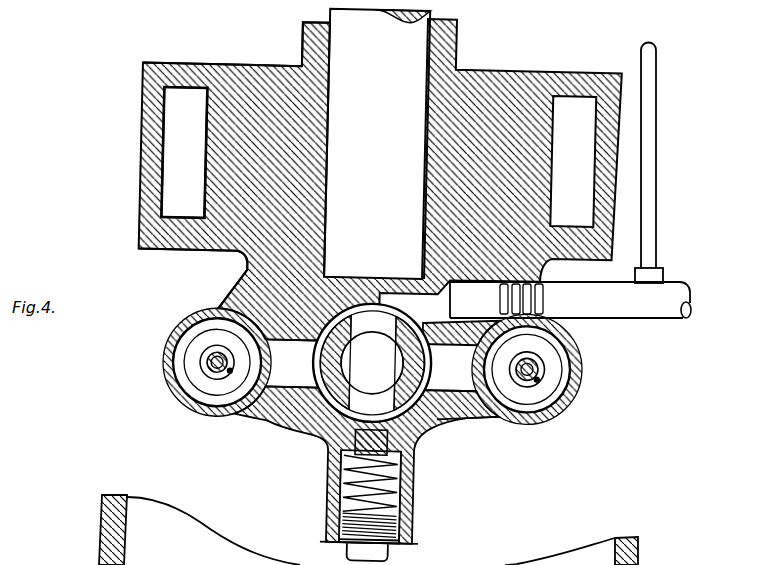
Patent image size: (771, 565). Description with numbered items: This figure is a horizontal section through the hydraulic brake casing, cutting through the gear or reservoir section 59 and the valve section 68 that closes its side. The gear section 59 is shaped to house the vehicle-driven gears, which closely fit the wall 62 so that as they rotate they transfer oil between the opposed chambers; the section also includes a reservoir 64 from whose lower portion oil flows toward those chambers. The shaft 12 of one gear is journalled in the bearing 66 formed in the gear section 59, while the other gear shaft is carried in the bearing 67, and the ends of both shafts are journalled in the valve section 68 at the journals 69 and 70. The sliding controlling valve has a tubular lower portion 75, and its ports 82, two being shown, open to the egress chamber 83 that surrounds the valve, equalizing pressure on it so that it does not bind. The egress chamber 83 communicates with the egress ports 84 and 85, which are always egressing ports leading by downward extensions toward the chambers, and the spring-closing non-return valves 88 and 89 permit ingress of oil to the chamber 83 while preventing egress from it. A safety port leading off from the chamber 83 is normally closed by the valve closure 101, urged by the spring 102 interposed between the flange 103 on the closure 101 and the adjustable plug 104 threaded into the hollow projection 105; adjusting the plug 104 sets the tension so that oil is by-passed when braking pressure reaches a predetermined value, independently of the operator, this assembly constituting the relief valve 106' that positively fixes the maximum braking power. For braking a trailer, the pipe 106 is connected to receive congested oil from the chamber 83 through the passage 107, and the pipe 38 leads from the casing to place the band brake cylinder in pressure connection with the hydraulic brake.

The shaft 12 is at (393, 80).
The pipe 38 is at (658, 182).
The gear or reservoir section 59 is at (278, 51).
The wall 62 is at (138, 145).
The reservoir 64 is at (590, 563).
The bearing 66 is at (303, 26).
The bearing 67 is at (458, 564).
The valve section 68 is at (217, 243).
The journal 69 is at (240, 278).
The journal 70 is at (238, 170).
The tubular lower portion of controlling valve 75 is at (462, 403).
The port 82 is at (386, 325).
The egress chamber 83 is at (313, 428).
The egress port 84 is at (258, 410).
The egress port 85 is at (474, 405).
The non-return valve 88 is at (192, 362).
The non-return valve 89 is at (553, 378).
The valve closure 101 is at (330, 452).
The spring 102 is at (328, 493).
The flange 103 is at (413, 455).
The adjustable plug 104 is at (413, 515).
The hollow projection 105 is at (328, 515).
The pipe 106 is at (570, 314).
The relief valve 106' is at (400, 496).
The passage 107 is at (457, 305).